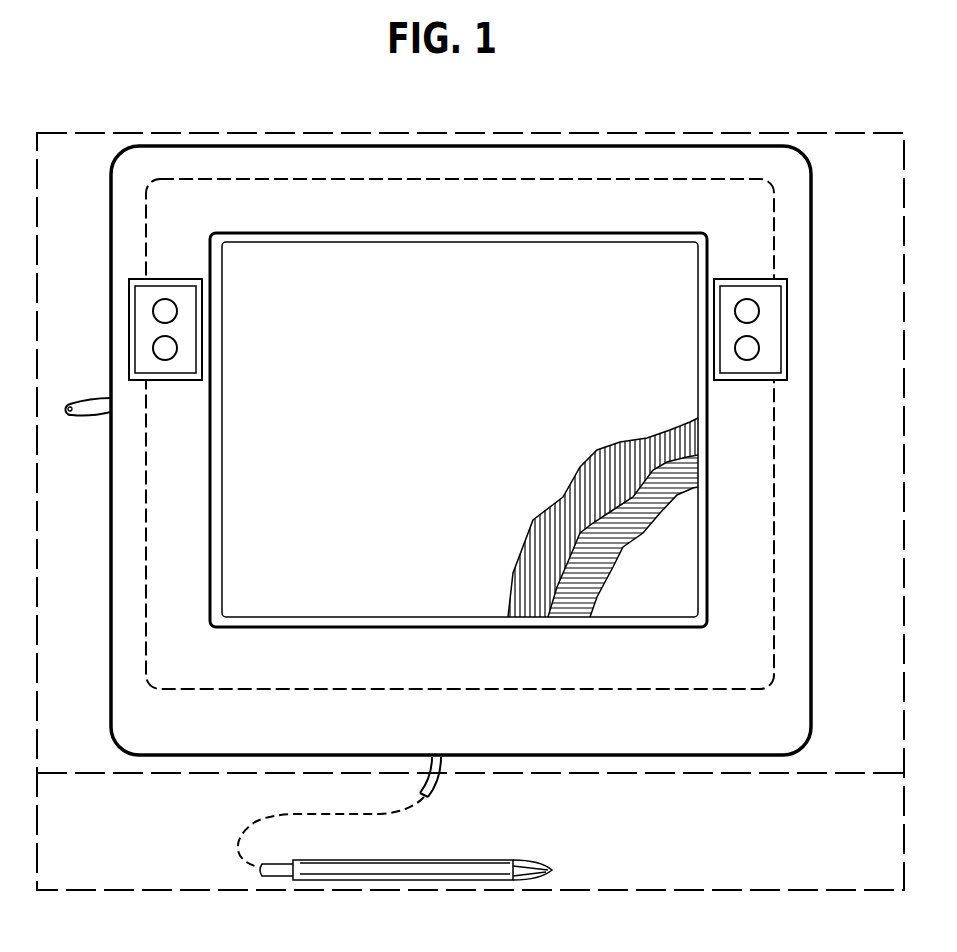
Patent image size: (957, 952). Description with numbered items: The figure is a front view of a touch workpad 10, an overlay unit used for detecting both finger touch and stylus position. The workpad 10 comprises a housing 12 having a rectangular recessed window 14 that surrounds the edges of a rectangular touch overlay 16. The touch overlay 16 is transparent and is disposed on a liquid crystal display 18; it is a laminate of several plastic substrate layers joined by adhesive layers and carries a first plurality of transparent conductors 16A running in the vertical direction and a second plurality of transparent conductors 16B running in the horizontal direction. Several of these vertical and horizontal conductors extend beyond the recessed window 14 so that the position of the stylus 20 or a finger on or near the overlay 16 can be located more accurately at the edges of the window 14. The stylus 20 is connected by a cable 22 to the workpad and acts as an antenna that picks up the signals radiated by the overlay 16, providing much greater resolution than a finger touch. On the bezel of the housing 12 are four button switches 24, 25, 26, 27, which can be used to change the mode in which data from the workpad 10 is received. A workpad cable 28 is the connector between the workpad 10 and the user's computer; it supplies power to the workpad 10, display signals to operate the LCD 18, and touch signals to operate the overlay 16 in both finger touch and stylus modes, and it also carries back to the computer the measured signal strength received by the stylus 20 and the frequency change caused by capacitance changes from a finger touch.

The workpad 10 is at (880, 881).
The housing 12 is at (104, 562).
The recessed window 14 is at (223, 468).
The touch overlay 16 is at (470, 439).
The first plurality of transparent conductors 16A is at (568, 498).
The second plurality of transparent conductors 16B is at (574, 592).
The liquid crystal display 18 is at (675, 586).
The stylus 20 is at (437, 860).
The cable 22 is at (437, 786).
The button switch 24 is at (745, 309).
The button switch 25 is at (747, 347).
The button switch 26 is at (152, 311).
The button switch 27 is at (152, 348).
The workpad cable 28 is at (85, 413).